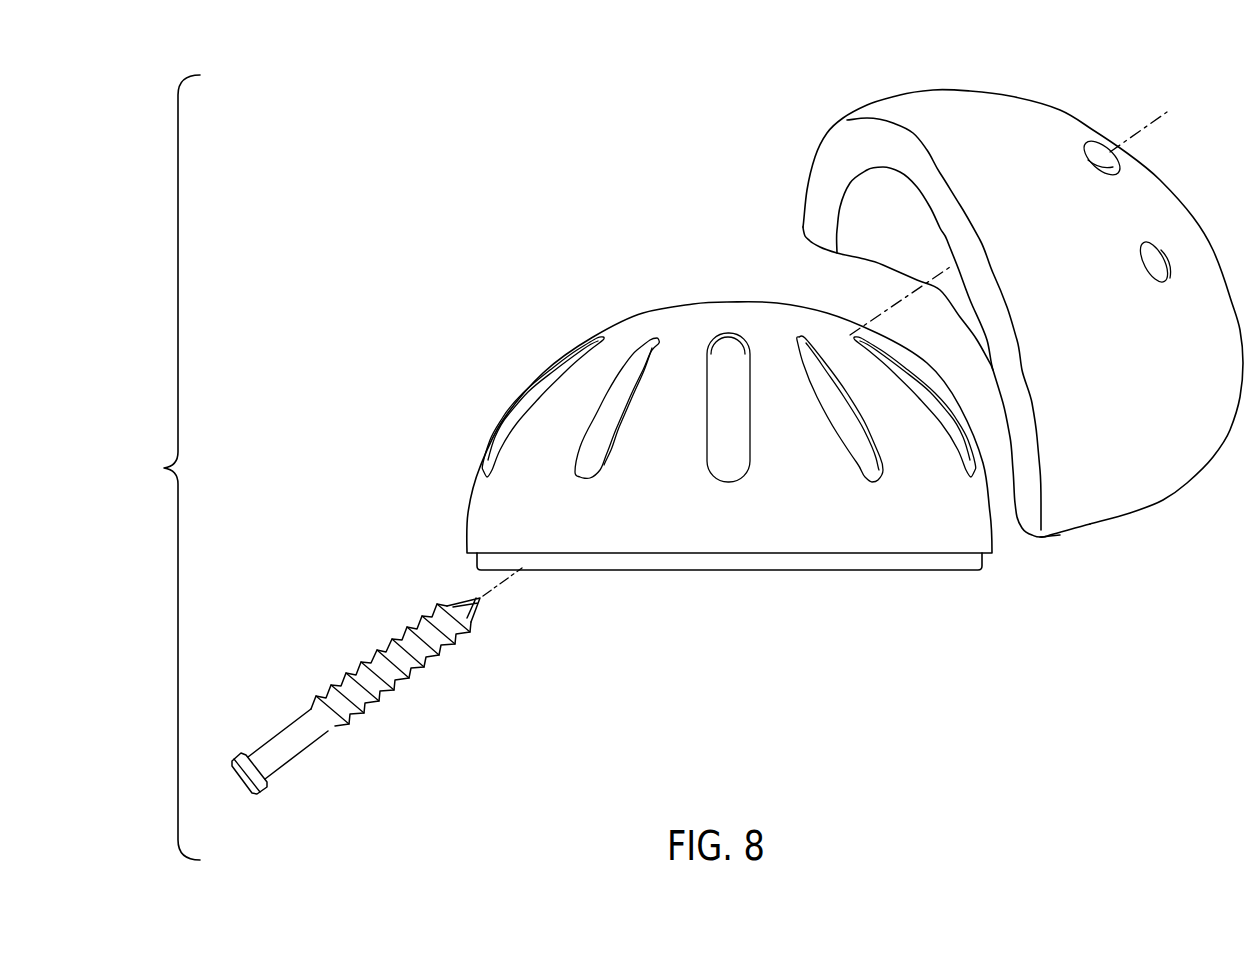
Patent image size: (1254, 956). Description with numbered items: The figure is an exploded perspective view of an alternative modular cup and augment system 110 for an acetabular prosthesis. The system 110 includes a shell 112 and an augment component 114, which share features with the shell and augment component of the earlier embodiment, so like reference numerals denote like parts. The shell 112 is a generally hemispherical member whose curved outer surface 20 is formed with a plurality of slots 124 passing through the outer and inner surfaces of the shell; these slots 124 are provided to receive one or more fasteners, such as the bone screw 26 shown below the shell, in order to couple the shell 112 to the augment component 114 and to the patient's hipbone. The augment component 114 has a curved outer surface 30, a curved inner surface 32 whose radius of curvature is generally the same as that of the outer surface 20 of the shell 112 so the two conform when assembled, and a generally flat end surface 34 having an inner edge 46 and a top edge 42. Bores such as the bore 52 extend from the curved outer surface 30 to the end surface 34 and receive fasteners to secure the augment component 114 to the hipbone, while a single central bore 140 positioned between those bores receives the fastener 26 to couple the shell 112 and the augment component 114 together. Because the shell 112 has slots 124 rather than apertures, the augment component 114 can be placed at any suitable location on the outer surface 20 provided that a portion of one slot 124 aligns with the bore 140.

The modular cup and augment system 110 is at (165, 467).
The shell 112 is at (502, 374).
The outer surface 20 is at (693, 350).
The slots 124 is at (607, 455).
The fastener 26 is at (422, 706).
The curved outer surface 30 is at (1160, 477).
The curved inner surface 32 is at (863, 228).
The end surface 34 is at (1077, 537).
The top edge 42 is at (937, 165).
The inner edge 46 is at (873, 263).
The second bore 52 is at (1167, 279).
The central bore 140 is at (1117, 167).
The augment component 114 is at (1097, 117).